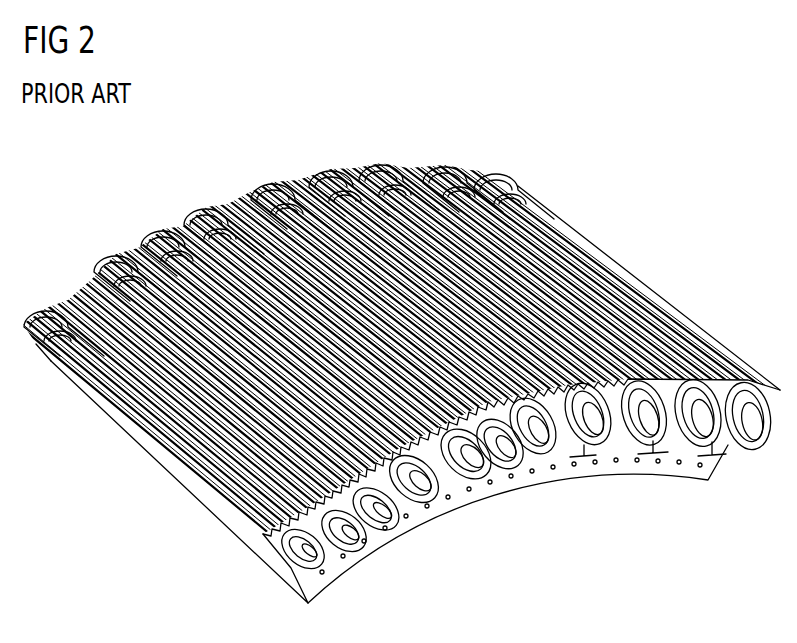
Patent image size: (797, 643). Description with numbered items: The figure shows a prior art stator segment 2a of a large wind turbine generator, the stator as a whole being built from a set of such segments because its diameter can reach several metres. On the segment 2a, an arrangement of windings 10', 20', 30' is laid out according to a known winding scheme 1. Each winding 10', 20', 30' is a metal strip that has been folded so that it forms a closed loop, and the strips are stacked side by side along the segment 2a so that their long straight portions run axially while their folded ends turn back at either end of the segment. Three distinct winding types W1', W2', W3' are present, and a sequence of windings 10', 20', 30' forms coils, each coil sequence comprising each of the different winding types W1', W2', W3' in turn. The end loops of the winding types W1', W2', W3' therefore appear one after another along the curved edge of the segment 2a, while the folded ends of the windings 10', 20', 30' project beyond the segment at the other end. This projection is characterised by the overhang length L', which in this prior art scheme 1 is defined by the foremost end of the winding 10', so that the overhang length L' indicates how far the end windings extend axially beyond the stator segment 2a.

The winding scheme 1 is at (381, 138).
The first winding type W1' is at (170, 232).
The second winding type W2' is at (118, 269).
The third winding type W3' is at (64, 311).
The stator segment 2a is at (185, 487).
The winding 10' is at (296, 574).
The winding 20' is at (309, 550).
The winding 30' is at (314, 526).
The overhang length L' is at (747, 382).